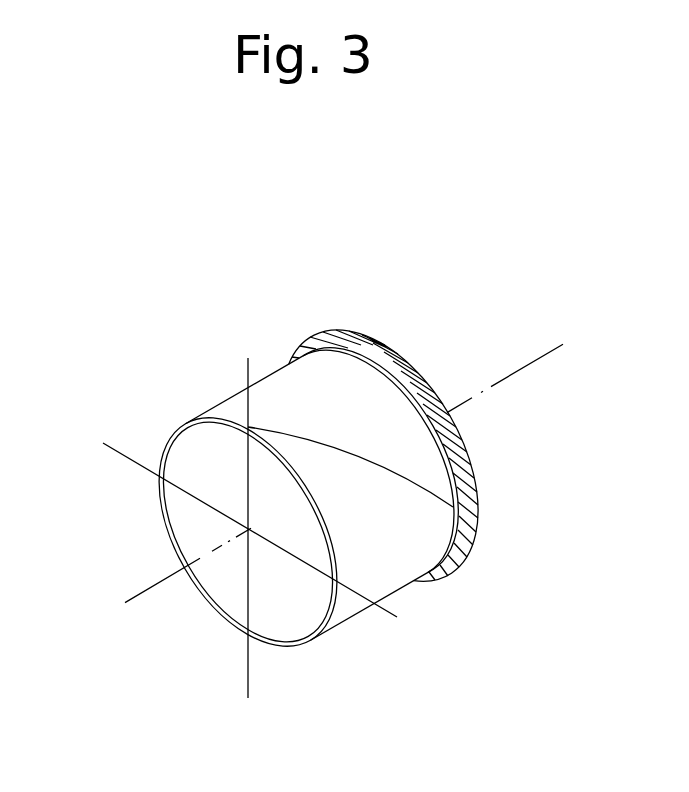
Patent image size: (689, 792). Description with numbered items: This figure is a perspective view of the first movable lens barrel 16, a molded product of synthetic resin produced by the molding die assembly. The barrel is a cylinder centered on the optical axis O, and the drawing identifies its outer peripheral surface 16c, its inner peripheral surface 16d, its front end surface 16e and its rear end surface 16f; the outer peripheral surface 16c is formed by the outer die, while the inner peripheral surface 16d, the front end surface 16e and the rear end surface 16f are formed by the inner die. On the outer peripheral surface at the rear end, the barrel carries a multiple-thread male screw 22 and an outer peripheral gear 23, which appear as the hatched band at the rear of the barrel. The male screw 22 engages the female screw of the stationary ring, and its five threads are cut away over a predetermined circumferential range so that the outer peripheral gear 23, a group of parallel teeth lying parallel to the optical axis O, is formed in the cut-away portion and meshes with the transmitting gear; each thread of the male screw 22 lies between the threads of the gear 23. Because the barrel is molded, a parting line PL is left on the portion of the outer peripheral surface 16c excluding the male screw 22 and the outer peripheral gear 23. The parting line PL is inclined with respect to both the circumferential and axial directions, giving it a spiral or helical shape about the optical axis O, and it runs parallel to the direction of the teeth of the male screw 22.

The first movable lens barrel 16 is at (220, 358).
The outer peripheral surface 16c is at (390, 557).
The inner peripheral surface 16d is at (222, 443).
The front end surface 16e is at (164, 497).
The rear end surface 16f is at (477, 490).
The multiple thread (male screw) 22 is at (403, 432).
The outer peripheral gear 23 is at (428, 380).
The parting line PL is at (283, 359).
The optical axis O is at (155, 588).